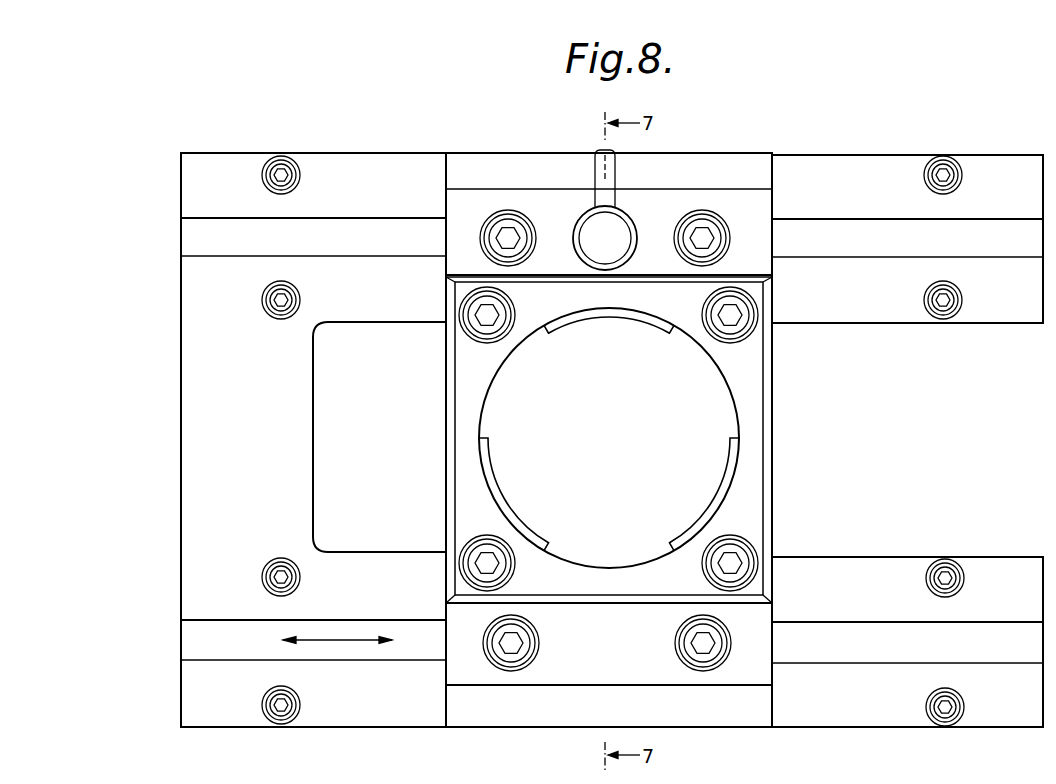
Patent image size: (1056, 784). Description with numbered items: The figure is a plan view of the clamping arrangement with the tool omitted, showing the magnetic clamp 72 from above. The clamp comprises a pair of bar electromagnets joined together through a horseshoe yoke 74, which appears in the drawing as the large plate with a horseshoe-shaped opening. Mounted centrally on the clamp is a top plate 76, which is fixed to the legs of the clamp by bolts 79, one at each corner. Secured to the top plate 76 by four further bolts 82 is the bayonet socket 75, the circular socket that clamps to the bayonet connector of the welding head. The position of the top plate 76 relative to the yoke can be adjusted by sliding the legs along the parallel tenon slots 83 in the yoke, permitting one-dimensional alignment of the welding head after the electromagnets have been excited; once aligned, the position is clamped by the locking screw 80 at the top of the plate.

The magnetic clamp 72 is at (176, 433).
The horseshoe yoke 74 is at (296, 433).
The bayonet socket 75 is at (747, 378).
The top plate 76 is at (740, 200).
The bolts 79 is at (493, 229).
The locking screw 80 is at (597, 232).
The bolts 82 is at (500, 312).
The parallel tenon slots 83 is at (190, 234).